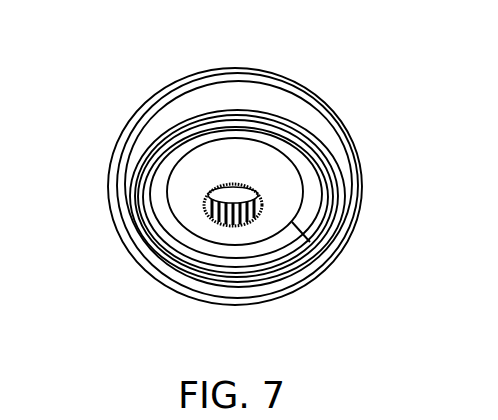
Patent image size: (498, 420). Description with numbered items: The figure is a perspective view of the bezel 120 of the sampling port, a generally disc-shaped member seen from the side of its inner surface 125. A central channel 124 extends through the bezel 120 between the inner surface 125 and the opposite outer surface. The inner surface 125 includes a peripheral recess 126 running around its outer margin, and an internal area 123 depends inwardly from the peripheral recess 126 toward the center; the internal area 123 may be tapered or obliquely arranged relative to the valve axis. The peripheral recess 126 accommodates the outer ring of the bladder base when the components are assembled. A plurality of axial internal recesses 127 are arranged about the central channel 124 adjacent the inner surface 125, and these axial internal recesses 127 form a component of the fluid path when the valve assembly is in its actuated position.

The bezel 120 is at (218, 186).
The internal area 123 is at (333, 247).
The central channel 124 is at (228, 196).
The inner surface 125 is at (178, 205).
The peripheral recess 126 is at (277, 257).
The axial internal recesses 127 is at (254, 188).